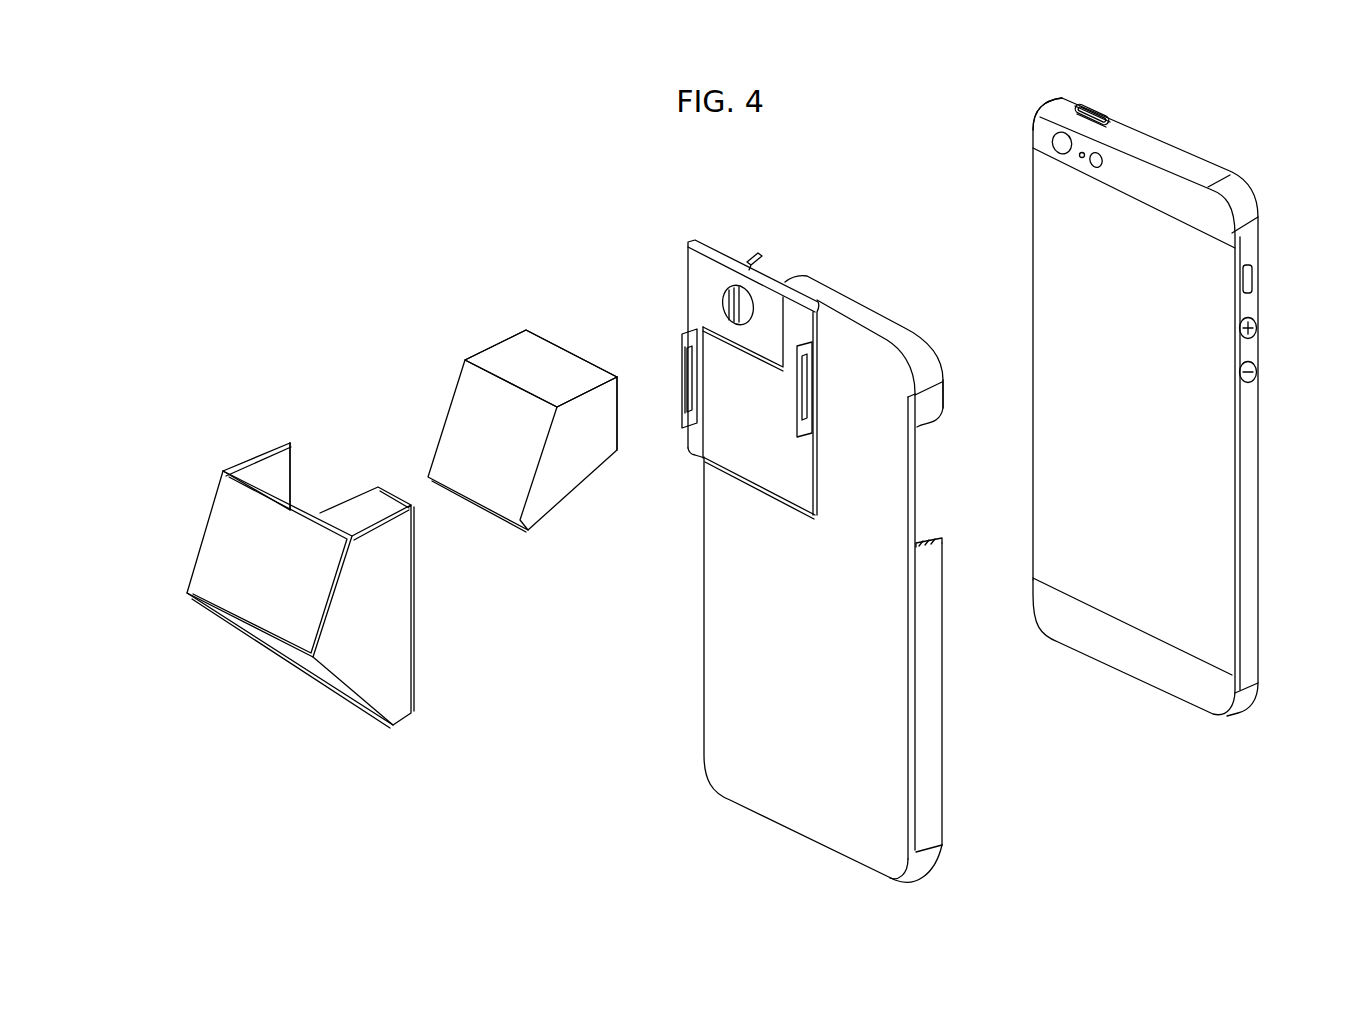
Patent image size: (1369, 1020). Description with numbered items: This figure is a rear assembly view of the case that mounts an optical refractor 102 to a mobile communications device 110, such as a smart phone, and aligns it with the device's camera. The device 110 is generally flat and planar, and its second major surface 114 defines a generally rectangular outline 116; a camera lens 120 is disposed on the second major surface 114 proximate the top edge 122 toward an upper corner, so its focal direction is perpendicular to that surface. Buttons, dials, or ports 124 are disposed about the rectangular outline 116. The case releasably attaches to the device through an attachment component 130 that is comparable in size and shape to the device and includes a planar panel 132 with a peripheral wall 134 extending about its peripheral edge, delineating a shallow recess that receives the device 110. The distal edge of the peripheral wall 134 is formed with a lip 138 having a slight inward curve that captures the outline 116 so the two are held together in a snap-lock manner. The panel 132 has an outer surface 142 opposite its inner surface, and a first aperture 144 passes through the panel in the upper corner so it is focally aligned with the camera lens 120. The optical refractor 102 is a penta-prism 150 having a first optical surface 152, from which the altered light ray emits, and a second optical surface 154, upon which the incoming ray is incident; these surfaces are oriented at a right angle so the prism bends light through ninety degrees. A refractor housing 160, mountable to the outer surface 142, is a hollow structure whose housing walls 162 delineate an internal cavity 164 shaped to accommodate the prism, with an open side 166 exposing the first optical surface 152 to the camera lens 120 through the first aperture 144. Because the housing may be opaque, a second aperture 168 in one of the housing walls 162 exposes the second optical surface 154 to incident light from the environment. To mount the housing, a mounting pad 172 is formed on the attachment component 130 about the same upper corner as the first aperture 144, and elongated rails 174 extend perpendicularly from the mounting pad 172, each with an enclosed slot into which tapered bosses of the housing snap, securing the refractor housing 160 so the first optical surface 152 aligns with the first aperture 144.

The optical refractor 102 is at (505, 402).
The mobile communications device 110 is at (1145, 389).
The second major surface 114 is at (1050, 340).
The rectangular outline 116 is at (1052, 105).
The camera lens 120 is at (1052, 140).
The top edge 122 is at (1200, 170).
The buttons, dials, or ports 124 is at (1256, 333).
The attachment component 130 is at (804, 524).
The planar panel 132 is at (913, 480).
The peripheral wall 134 is at (930, 703).
The lip 138 is at (937, 543).
The outer surface 142 is at (794, 740).
The first aperture 144 is at (735, 300).
The penta-prism 150 is at (539, 402).
The first optical surface 152 is at (626, 414).
The second optical surface 154 is at (540, 351).
The refractor housing 160 is at (306, 540).
The housing walls 162 is at (393, 624).
The internal cavity 164 is at (276, 470).
The open side 166 is at (290, 465).
The second aperture 168 is at (248, 457).
The mounting pad 172 is at (691, 342).
The elongated rails 174 is at (686, 350).